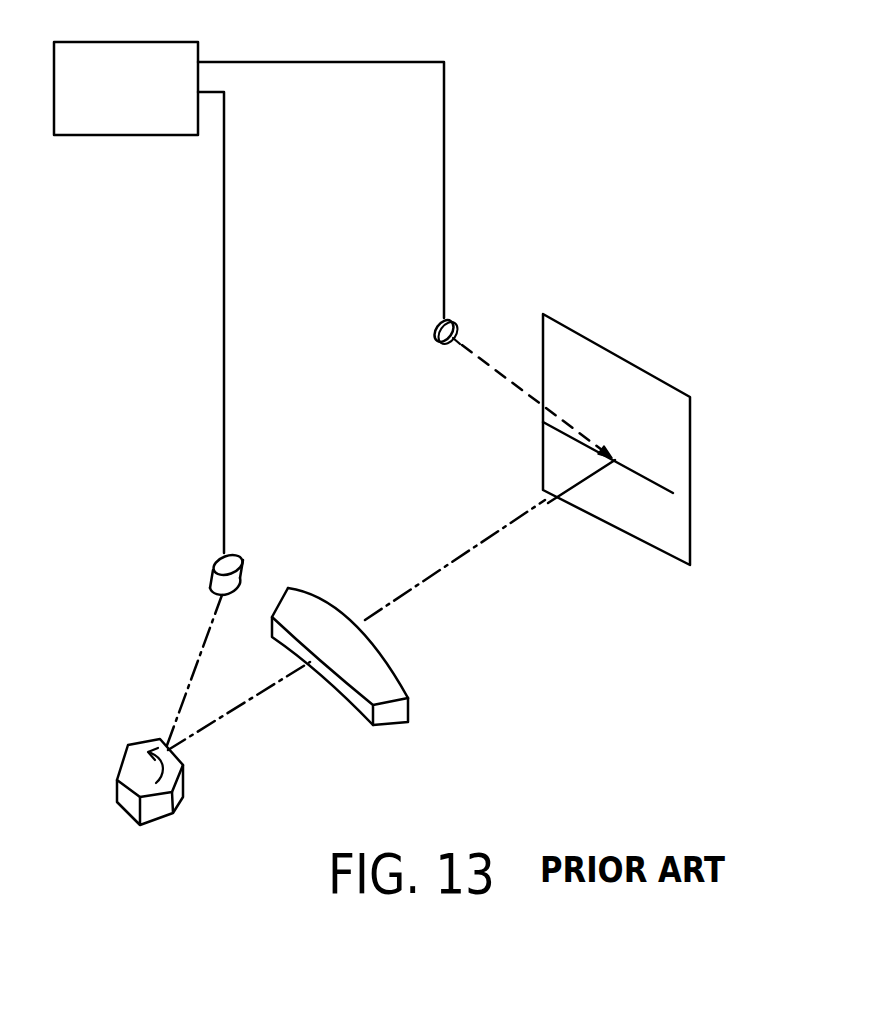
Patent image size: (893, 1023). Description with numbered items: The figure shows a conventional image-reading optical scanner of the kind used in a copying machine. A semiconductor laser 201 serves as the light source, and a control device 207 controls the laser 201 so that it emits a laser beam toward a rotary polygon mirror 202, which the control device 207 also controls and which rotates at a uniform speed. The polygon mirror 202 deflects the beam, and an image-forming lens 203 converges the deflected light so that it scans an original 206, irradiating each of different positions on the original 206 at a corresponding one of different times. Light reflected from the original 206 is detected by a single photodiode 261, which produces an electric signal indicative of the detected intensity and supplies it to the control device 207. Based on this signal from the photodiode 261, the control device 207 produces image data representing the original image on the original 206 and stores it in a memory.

The semiconductor laser 201 is at (213, 560).
The rotary polygon mirror 202 is at (129, 744).
The image-forming lens 203 is at (393, 718).
The original 206 is at (693, 443).
The control device 207 is at (199, 48).
The photodiode 261 is at (430, 334).